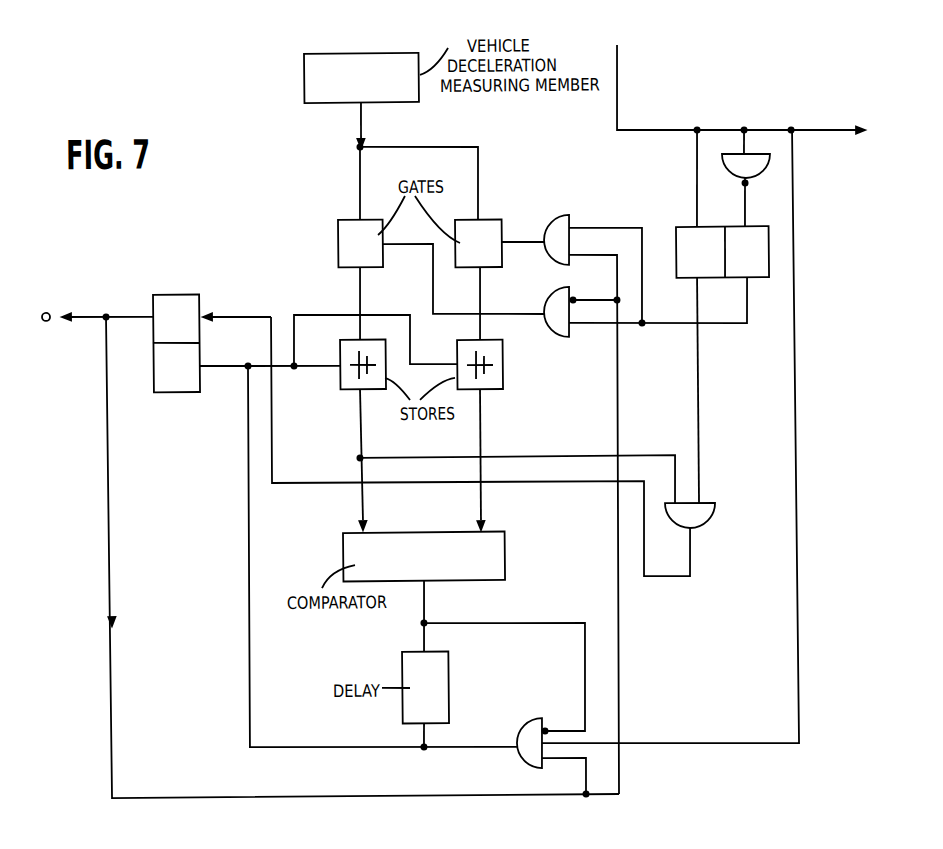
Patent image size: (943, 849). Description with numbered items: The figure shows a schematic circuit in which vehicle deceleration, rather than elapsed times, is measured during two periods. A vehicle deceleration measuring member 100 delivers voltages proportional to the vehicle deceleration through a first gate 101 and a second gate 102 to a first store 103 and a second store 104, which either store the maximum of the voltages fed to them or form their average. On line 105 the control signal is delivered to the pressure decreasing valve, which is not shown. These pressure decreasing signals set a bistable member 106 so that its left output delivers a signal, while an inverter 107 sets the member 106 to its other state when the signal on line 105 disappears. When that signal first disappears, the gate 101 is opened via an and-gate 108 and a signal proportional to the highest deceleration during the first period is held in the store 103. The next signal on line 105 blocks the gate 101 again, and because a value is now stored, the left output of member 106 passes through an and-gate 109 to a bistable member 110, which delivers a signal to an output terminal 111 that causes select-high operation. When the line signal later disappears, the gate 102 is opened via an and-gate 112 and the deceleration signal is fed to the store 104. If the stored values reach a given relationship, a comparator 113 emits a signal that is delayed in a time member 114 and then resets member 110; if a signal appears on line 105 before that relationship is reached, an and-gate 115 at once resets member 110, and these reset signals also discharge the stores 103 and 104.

The vehicle deceleration measuring member 100 is at (392, 61).
The gate 101 is at (350, 239).
The gate 102 is at (492, 240).
The store 103 is at (344, 379).
The store 104 is at (501, 378).
The line 105 is at (621, 62).
The bistable member 106 is at (692, 235).
The inverter 107 is at (753, 168).
The and-gate 108 is at (558, 336).
The and-gate 109 is at (705, 512).
The bistable member 110 is at (182, 289).
The output terminal 111 is at (47, 309).
The and-gate 112 is at (567, 226).
The comparator 113 is at (494, 557).
The time member 114 is at (436, 690).
The and-gate 115 is at (522, 758).